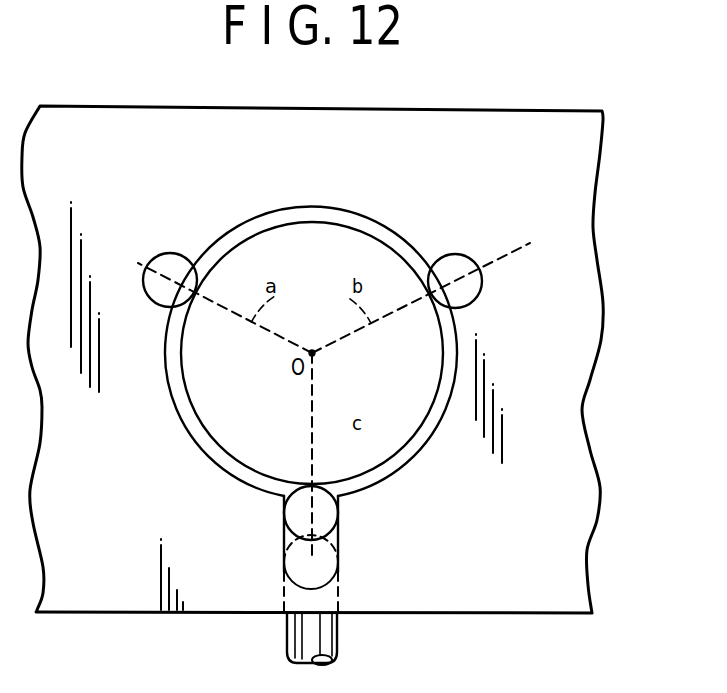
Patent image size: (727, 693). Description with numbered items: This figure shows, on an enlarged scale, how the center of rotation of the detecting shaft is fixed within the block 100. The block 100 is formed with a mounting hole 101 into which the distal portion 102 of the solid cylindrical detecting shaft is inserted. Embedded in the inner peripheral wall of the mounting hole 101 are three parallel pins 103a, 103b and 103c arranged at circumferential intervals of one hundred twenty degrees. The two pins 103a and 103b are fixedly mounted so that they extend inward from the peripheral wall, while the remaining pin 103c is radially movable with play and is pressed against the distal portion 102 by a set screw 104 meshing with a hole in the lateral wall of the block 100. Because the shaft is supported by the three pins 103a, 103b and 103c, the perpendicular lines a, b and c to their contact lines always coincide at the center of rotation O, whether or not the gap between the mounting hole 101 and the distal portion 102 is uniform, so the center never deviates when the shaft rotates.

The block 100 is at (473, 117).
The mounting hole 101 is at (183, 423).
The distal portion of the detecting shaft 102 is at (410, 425).
The parallel pin 103a is at (165, 254).
The parallel pin 103b is at (456, 255).
The parallel pin 103c is at (327, 510).
The set screw 104 is at (322, 632).